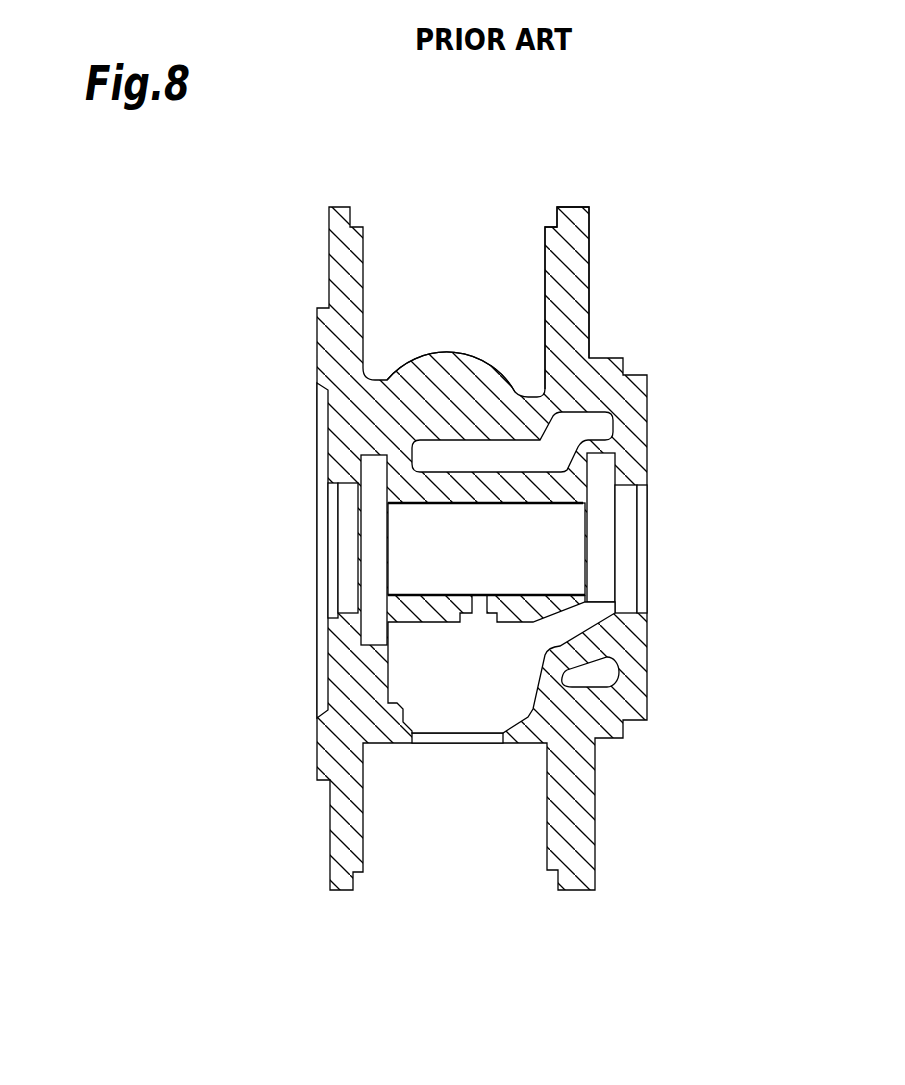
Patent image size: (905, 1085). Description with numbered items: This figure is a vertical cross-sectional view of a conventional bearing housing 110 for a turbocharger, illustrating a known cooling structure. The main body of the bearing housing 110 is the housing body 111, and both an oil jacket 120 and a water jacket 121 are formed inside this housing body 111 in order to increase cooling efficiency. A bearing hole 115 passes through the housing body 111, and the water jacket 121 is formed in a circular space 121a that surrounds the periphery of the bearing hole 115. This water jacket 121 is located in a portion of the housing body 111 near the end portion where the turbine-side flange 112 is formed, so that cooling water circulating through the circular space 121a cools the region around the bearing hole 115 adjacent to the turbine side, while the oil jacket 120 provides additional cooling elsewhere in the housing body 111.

The bearing housing 110 is at (316, 343).
The housing body 111 is at (433, 351).
The turbine-side flange 112 is at (582, 295).
The bearing hole 115 is at (523, 503).
The oil jacket 120 is at (487, 662).
The water jacket 121 is at (495, 458).
The circular space 121a is at (595, 427).